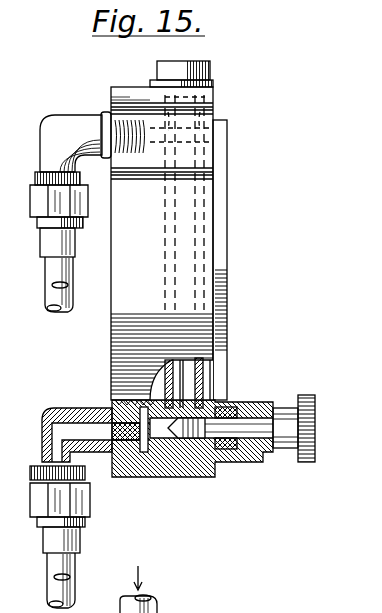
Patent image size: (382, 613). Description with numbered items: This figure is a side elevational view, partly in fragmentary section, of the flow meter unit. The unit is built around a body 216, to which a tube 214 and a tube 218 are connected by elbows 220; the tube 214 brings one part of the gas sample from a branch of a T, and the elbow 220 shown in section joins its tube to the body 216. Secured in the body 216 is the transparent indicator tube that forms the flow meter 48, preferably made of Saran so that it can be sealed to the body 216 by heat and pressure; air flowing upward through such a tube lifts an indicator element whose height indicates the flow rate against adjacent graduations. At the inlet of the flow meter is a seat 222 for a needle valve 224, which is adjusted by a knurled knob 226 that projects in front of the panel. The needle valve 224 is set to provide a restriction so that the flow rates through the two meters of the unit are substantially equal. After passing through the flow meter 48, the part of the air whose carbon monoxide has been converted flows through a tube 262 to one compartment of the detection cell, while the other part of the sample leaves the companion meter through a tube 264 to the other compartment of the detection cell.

The flow meter 48 is at (203, 368).
The tube 214 is at (108, 584).
The body 216 is at (147, 470).
The tube 218 is at (78, 562).
The elbow 220 is at (84, 410).
The seat 222 is at (178, 440).
The needle valve 224 is at (228, 430).
The knurled knob 226 is at (307, 394).
The tube 262 is at (62, 268).
The tube 264 is at (62, 308).